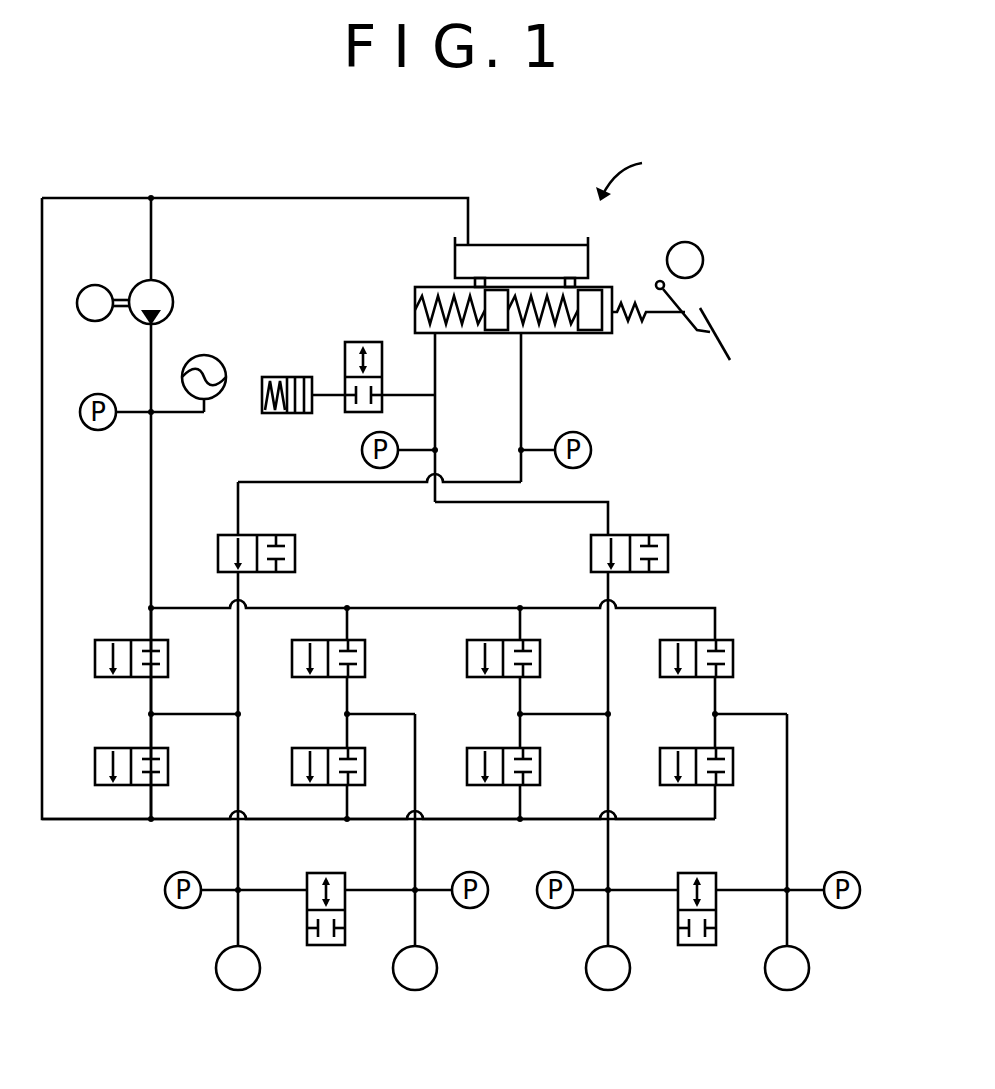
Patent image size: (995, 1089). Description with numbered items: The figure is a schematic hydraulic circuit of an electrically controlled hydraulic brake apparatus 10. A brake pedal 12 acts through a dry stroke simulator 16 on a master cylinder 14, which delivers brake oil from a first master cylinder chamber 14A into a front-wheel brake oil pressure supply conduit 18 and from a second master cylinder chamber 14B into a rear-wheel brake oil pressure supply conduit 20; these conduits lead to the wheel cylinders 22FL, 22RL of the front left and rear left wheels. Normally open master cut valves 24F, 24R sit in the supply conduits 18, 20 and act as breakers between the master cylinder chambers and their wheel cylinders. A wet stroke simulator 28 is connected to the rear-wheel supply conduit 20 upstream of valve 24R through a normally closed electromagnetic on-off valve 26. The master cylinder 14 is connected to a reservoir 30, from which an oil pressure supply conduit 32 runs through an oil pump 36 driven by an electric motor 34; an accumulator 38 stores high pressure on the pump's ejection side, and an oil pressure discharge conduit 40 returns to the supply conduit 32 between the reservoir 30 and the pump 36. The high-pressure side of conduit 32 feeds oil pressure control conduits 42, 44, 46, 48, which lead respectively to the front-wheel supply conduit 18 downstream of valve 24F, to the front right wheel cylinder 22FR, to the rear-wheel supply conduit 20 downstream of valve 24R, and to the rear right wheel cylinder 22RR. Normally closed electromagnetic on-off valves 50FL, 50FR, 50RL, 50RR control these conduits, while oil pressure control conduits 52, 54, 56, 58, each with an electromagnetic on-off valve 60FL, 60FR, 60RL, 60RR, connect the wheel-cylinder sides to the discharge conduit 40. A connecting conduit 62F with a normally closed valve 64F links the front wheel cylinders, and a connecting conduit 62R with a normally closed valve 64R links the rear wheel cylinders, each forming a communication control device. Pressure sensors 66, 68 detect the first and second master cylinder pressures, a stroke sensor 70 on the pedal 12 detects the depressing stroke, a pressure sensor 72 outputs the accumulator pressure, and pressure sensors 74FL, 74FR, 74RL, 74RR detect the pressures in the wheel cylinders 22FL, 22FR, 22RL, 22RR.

The electrically controlled hydraulic brake apparatus 10 is at (632, 171).
The brake pedal 12 is at (720, 340).
The master cylinder 14 is at (440, 287).
The first master cylinder chamber 14A is at (565, 335).
The second master cylinder chamber 14B is at (455, 335).
The dry stroke simulator 16 is at (635, 318).
The front-wheel brake oil pressure supply conduit 18 is at (521, 403).
The rear-wheel brake oil pressure supply conduit 20 is at (435, 433).
The wheel cylinder 22FL is at (238, 990).
The wheel cylinder 22FR is at (415, 990).
The wheel cylinder 22RL is at (608, 990).
The wheel cylinder 22RR is at (787, 990).
The electromagnetic on-off valve 24F is at (295, 553).
The electromagnetic on-off valve 24R is at (664, 553).
The electromagnetic on-off valve 26 is at (363, 342).
The wet stroke simulator 28 is at (270, 413).
The reservoir 30 is at (518, 257).
The oil pressure supply conduit 32 is at (280, 200).
The electric motor 34 is at (94, 285).
The oil pump 36 is at (173, 300).
The accumulator 38 is at (220, 362).
The oil pressure discharge conduit 40 is at (42, 545).
The oil pressure control conduit 42 is at (205, 712).
The oil pressure control conduit 44 is at (397, 712).
The oil pressure control conduit 46 is at (575, 712).
The oil pressure control conduit 48 is at (790, 812).
The electromagnetic on-off valve 50FL is at (95, 655).
The electromagnetic on-off valve 50FR is at (292, 665).
The electromagnetic on-off valve 50RL is at (467, 665).
The electromagnetic on-off valve 50RR is at (733, 660).
The oil pressure control conduit 52 is at (158, 808).
The oil pressure control conduit 54 is at (350, 810).
The oil pressure control conduit 56 is at (533, 810).
The oil pressure control conduit 58 is at (715, 795).
The electromagnetic on-off valve 60FL is at (95, 763).
The electromagnetic on-off valve 60FR is at (292, 775).
The electromagnetic on-off valve 60RL is at (467, 775).
The electromagnetic on-off valve 60RR is at (660, 770).
The connecting conduit 62F is at (290, 888).
The connecting conduit 62R is at (665, 888).
The electromagnetic on-off valve 64F is at (326, 945).
The electromagnetic on-off valve 64R is at (697, 945).
The pressure sensor 66 is at (591, 450).
The pressure sensor 68 is at (362, 450).
The stroke sensor 70 is at (703, 260).
The pressure sensor 72 is at (98, 430).
The pressure sensor 74FL is at (170, 905).
The pressure sensor 74FR is at (462, 872).
The pressure sensor 74RL is at (545, 908).
The pressure sensor 74RR is at (835, 872).